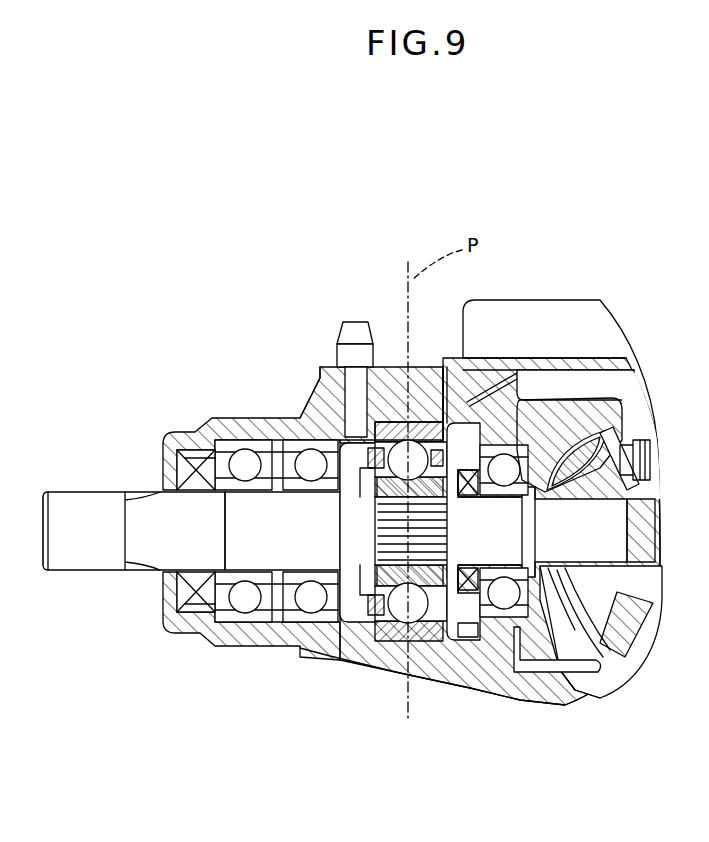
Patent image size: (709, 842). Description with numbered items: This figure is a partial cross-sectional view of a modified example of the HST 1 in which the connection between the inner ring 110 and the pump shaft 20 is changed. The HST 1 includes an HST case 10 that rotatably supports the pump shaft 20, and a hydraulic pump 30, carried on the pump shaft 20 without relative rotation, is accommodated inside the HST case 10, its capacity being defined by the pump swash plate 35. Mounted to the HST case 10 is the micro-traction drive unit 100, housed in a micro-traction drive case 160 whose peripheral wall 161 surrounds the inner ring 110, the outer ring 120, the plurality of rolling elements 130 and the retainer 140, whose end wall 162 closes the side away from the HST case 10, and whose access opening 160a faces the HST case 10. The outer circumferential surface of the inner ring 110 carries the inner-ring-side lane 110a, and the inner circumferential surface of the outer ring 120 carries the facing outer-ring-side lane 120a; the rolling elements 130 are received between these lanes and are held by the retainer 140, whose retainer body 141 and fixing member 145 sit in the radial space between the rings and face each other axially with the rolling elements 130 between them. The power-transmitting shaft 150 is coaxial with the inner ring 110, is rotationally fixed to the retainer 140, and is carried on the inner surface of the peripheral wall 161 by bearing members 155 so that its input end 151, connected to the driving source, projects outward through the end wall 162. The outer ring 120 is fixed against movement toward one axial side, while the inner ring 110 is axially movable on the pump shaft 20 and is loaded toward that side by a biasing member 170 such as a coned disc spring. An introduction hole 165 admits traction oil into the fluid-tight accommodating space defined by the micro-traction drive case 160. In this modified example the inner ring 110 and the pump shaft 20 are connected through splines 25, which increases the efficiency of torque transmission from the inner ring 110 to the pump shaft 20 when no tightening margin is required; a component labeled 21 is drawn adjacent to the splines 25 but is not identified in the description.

The HST 1 is at (607, 285).
The HST case 10 is at (481, 502).
The pump shaft 20 is at (612, 537).
The spline 21 is at (375, 522).
The splines 25 is at (385, 540).
The hydraulic pump 30 is at (642, 432).
The pump swash plate 35 is at (558, 443).
The micro-traction drive unit 100 is at (283, 296).
The inner ring 110 is at (322, 655).
The inner-ring-side lane 110a is at (364, 645).
The outer ring 120 is at (396, 440).
The outer-ring-side lane 120a is at (418, 628).
The rolling elements 130 is at (403, 620).
The retainer 140 is at (325, 428).
The retainer body 141 is at (363, 612).
The fixing member 145 is at (449, 596).
The power-transmitting shaft 150 is at (160, 572).
The input end 151 is at (77, 565).
The bearing members 155 is at (246, 606).
The micro-traction drive case 160 is at (215, 394).
The access opening 160a is at (453, 398).
The peripheral wall 161 is at (256, 430).
The end wall 162 is at (170, 460).
The introduction hole 165 is at (338, 366).
The biasing member 170 is at (484, 678).